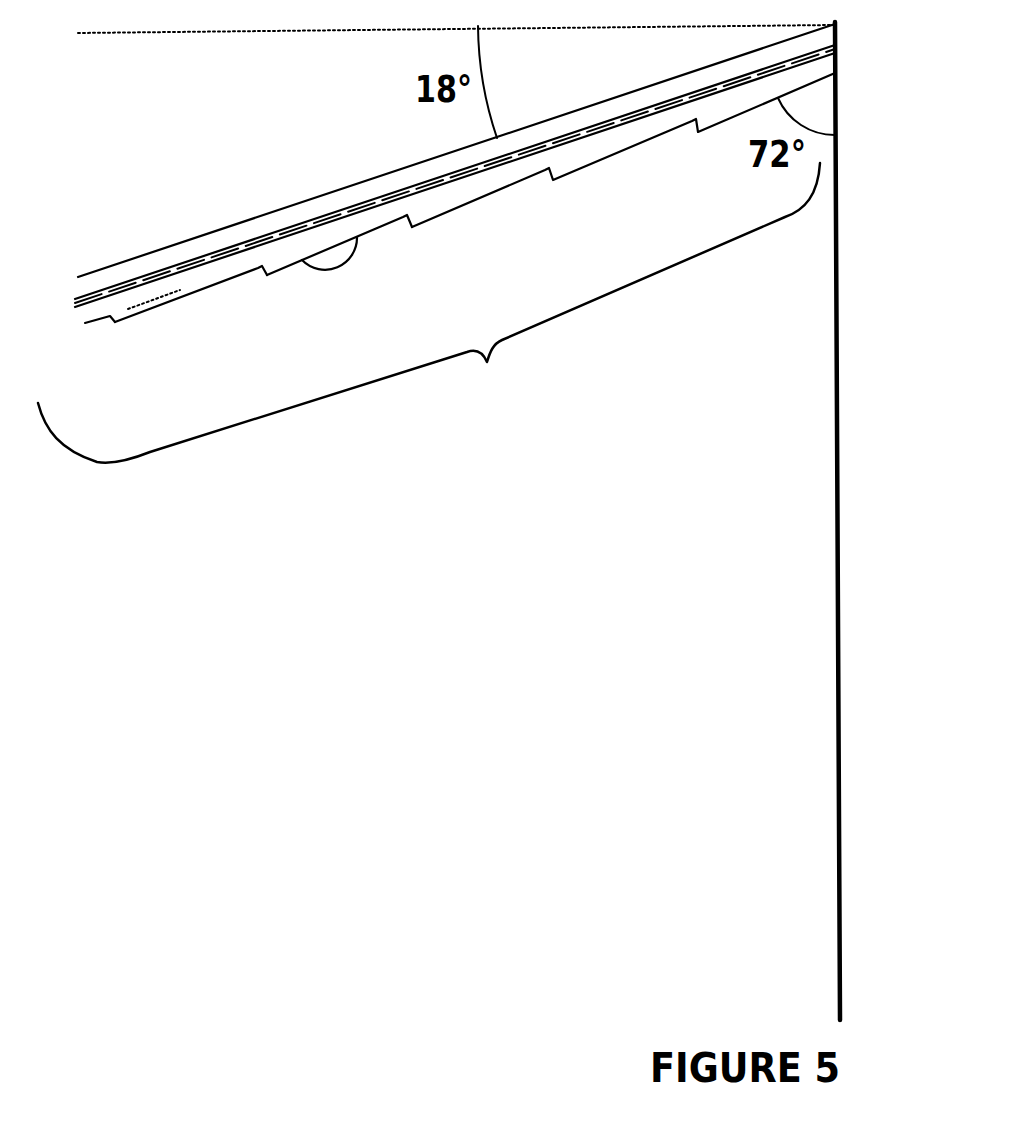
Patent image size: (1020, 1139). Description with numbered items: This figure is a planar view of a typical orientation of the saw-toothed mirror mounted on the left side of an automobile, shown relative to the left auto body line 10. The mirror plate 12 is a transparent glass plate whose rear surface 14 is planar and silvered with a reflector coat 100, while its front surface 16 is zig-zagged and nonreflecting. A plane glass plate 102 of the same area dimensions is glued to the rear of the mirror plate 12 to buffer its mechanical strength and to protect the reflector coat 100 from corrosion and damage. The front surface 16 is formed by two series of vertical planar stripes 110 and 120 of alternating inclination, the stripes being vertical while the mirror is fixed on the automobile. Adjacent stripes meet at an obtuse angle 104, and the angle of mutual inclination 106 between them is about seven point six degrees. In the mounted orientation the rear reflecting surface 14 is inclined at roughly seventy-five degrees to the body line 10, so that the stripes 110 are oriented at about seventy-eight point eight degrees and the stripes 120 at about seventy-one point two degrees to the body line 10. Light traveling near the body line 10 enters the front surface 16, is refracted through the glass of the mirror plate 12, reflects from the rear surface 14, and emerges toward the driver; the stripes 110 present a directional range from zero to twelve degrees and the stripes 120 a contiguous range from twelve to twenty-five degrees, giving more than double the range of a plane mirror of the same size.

The auto body line 10 is at (840, 865).
The mirror plate 12 is at (757, 90).
The rear surface 14 is at (603, 132).
The front surface 16 is at (429, 313).
The reflector coat 100 is at (158, 273).
The plane glass plate 102 is at (273, 227).
The obtuse angle 104 is at (347, 262).
The angle of mutual inclination 106 is at (132, 307).
The first series of stripes 110 is at (213, 281).
The second series of stripes 120 is at (283, 266).